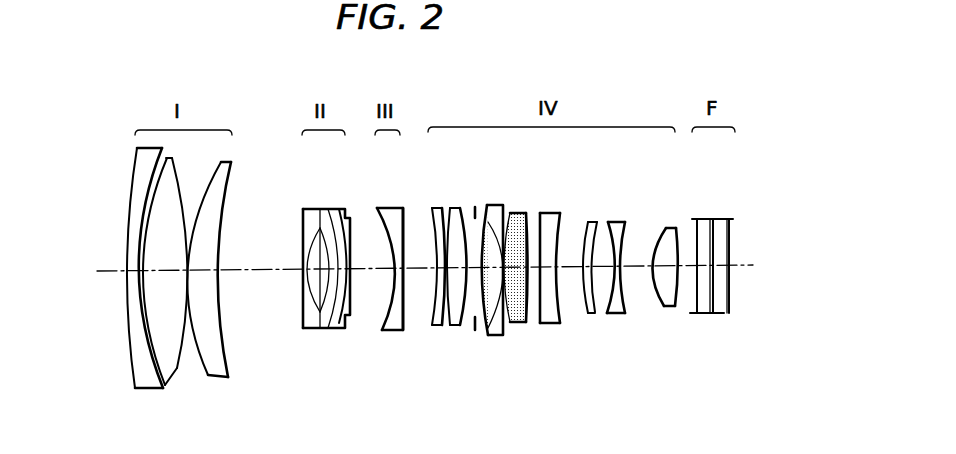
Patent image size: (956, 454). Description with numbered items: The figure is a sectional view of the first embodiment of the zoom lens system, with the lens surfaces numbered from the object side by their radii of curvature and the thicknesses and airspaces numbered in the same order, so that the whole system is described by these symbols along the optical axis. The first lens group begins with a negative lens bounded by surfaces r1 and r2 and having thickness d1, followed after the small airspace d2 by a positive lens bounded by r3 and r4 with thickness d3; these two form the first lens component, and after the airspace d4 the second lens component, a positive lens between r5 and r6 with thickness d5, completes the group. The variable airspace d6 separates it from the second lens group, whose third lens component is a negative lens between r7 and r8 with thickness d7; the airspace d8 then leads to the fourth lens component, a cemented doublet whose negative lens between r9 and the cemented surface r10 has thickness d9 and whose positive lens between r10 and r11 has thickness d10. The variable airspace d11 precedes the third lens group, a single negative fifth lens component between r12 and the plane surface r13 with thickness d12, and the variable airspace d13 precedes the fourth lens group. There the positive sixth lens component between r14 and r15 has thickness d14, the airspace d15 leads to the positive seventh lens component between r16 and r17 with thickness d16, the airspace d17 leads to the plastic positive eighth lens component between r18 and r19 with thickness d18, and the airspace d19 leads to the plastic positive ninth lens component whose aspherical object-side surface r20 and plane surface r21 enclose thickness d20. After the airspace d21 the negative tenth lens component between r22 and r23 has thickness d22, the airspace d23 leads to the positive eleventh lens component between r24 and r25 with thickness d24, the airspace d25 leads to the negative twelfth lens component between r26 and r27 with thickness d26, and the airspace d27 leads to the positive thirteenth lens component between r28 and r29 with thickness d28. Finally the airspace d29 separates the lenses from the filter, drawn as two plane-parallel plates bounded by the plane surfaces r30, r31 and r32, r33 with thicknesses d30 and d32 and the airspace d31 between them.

The thickness of the first lens d1 is at (130, 258).
The airspace between the first and second lenses d2 is at (141, 245).
The thickness of the second lens d3 is at (150, 218).
The airspace between the first and second lens components d4 is at (189, 252).
The thickness of the third lens d5 is at (218, 240).
The variable airspace between the first and second lens groups d6 is at (245, 264).
The thickness of the fourth lens d7 is at (300, 260).
The airspace between the third and fourth lens components d8 is at (313, 254).
The thickness of the fifth lens d9 is at (324, 240).
The thickness of the sixth lens d10 is at (334, 252).
The variable airspace between the second and third lens groups d11 is at (343, 252).
The thickness of the seventh lens d12 is at (366, 252).
The variable airspace between the third and fourth lens groups d13 is at (392, 252).
The thickness of the eighth lens d14 is at (408, 252).
The airspace between the sixth and seventh lens components d15 is at (422, 252).
The thickness of the ninth lens d16 is at (436, 252).
The airspace between the seventh and eighth lens components d17 is at (446, 252).
The thickness of the tenth lens d18 is at (462, 252).
The airspace between the eighth and ninth lens components d19 is at (488, 252).
The thickness of the eleventh lens d20 is at (500, 252).
The airspace between the ninth and tenth lens components d21 is at (516, 252).
The thickness of the twelfth lens d22 is at (535, 252).
The airspace between the tenth and eleventh lens components d23 is at (548, 252).
The thickness of the thirteenth lens d24 is at (575, 252).
The airspace between the eleventh and twelfth lens components d25 is at (588, 252).
The thickness of the fourteenth lens d26 is at (600, 252).
The airspace between the twelfth and thirteenth lens components d27 is at (613, 252).
The thickness of the fifteenth lens d28 is at (642, 252).
The airspace between the thirteenth lens component and the filter d29 is at (704, 222).
The thickness of the first filter plate d30 is at (711, 225).
The airspace between the filter plates d31 is at (720, 222).
The thickness of the second filter plate d32 is at (729, 224).
The object-side surface of the first lens r1 is at (136, 390).
The image-side surface of the first lens r2 is at (155, 389).
The object-side surface of the second lens r3 is at (167, 385).
The image-side surface of the second lens r4 is at (178, 369).
The object-side surface of the third lens r5 is at (210, 377).
The image-side surface of the third lens r6 is at (228, 379).
The object-side surface of the fourth lens r7 is at (303, 330).
The image-side surface of the fourth lens r8 is at (312, 318).
The object-side surface of the cemented doublet r9 is at (325, 316).
The cemented surface of the fourth lens component r10 is at (338, 328).
The image-side surface of the cemented doublet r11 is at (350, 324).
The object-side surface of the fifth lens component r12 is at (382, 332).
The image-side surface of the fifth lens component r13 is at (403, 331).
The object-side surface of the sixth lens component r14 is at (432, 327).
The image-side surface of the sixth lens component r15 is at (442, 327).
The object-side surface of the seventh lens component r16 is at (450, 327).
The image-side surface of the seventh lens component r17 is at (461, 327).
The object-side surface of the eighth lens component r18 is at (490, 337).
The image-side surface of the eighth lens component r19 is at (502, 336).
The aspherical object-side surface of the ninth lens component r20 is at (527, 324).
The image-side surface of the ninth lens component r21 is at (541, 325).
The object-side surface of the tenth lens component r22 is at (560, 325).
The image-side surface of the tenth lens component r23 is at (588, 315).
The object-side surface of the eleventh lens component r24 is at (596, 314).
The image-side surface of the eleventh lens component r25 is at (608, 315).
The object-side surface of the twelfth lens component r26 is at (625, 315).
The image-side surface of the twelfth lens component r27 is at (664, 308).
The object-side surface of the thirteenth lens component r28 is at (675, 308).
The image-side surface of the thirteenth lens component r29 is at (697, 315).
The object-side surface of the first filter plate r30 is at (710, 315).
The image-side surface of the first filter plate r31 is at (713, 315).
The object-side surface of the second filter plate r32 is at (727, 315).
The image-side surface of the second filter plate r33 is at (730, 315).